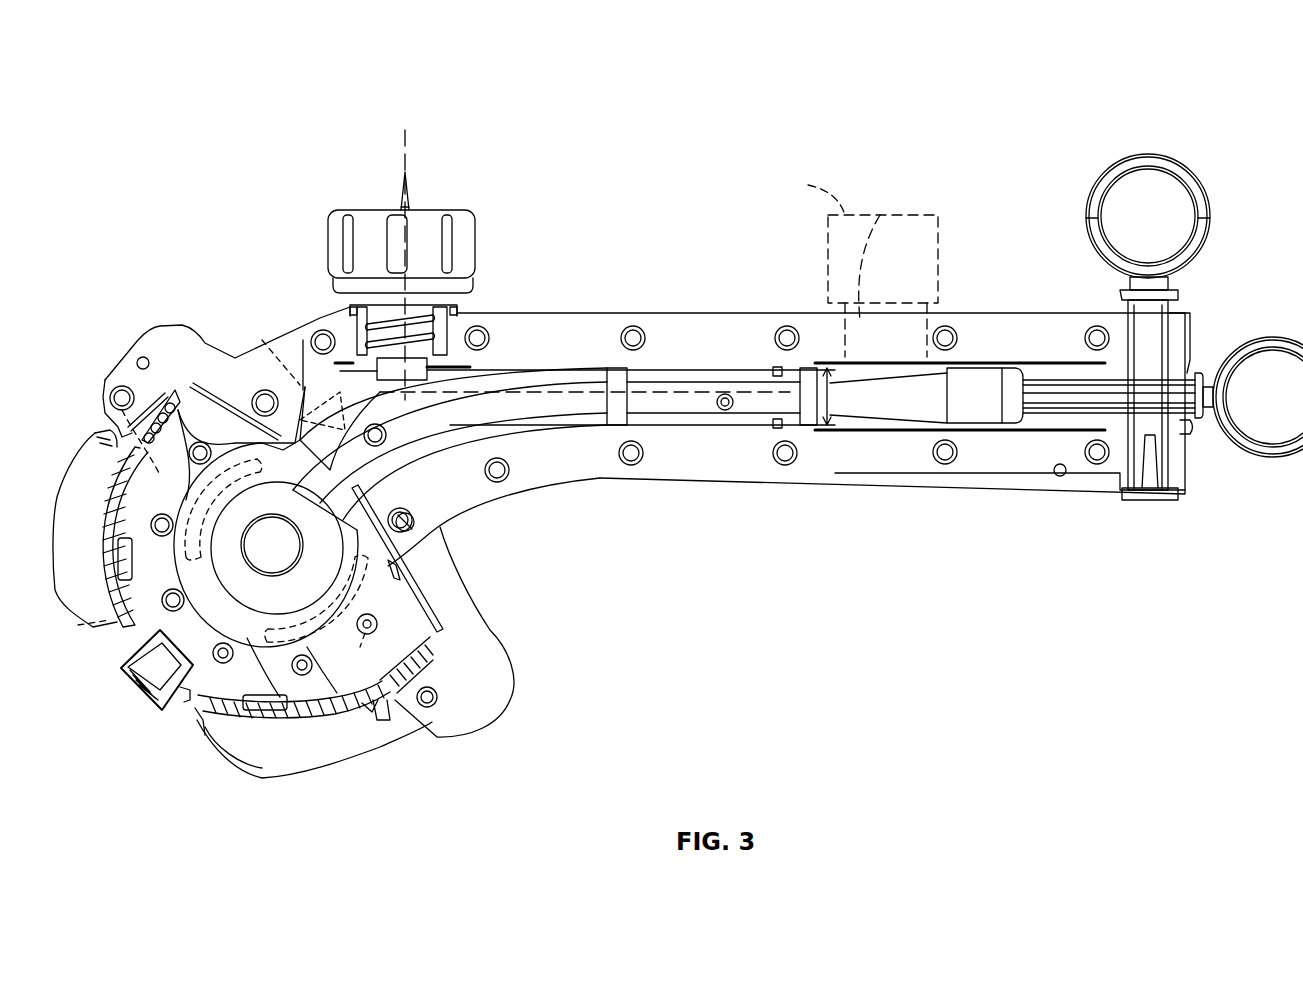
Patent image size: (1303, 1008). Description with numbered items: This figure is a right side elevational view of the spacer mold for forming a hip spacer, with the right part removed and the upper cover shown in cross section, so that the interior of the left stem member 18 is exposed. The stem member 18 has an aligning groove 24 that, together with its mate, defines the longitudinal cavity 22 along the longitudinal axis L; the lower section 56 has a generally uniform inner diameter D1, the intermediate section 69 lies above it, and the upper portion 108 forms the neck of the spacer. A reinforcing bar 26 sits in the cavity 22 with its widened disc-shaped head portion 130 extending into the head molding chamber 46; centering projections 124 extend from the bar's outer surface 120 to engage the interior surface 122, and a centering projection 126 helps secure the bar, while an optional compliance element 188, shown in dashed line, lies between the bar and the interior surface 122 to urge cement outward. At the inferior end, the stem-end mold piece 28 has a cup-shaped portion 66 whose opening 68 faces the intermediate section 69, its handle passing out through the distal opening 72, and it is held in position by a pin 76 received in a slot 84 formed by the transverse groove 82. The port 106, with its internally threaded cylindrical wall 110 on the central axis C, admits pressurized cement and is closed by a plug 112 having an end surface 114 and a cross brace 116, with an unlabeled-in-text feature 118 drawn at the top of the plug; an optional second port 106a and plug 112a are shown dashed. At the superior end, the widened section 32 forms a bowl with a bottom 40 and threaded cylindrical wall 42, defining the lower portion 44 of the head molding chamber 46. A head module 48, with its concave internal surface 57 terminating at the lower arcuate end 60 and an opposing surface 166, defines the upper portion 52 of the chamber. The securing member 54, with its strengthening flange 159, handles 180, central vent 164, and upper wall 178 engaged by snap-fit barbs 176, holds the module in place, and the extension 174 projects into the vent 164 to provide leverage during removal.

The left stem member 18 is at (750, 468).
The cavity 22 is at (686, 374).
The groove 24 is at (893, 422).
The reinforcing bar 26 is at (520, 375).
The stem-end mold piece 28 is at (1052, 407).
The widened section 32 is at (455, 728).
The bottom 40 is at (440, 618).
The cylindrical wall 42 is at (440, 665).
The lower portion 44 is at (405, 520).
The head molding chamber 46 is at (332, 700).
The head module 48 is at (208, 423).
The upper portion 52 is at (300, 708).
The securing member 54 is at (385, 727).
The lower section 56 is at (983, 433).
The internal surface 57 is at (124, 393).
The lower arcuate end 60 is at (460, 514).
The cup-shaped portion 66 is at (980, 370).
The opening 68 is at (940, 375).
The intermediate section 69 is at (572, 370).
The distal opening 72 is at (1186, 428).
The pin 76 is at (1165, 345).
The groove 82 is at (1165, 357).
The slot 84 is at (1157, 332).
The port 106 is at (450, 292).
The second port 106a is at (882, 190).
The upper portion 108 is at (503, 435).
The cylindrical wall 110 is at (350, 312).
The plug 112 is at (436, 215).
The plug 112a is at (795, 191).
The end surface 114 is at (430, 360).
The cross brace 116 is at (400, 200).
The indicator pin 118 is at (410, 185).
The outer surface 120 is at (437, 431).
The interior surface 122 is at (697, 410).
The centering projections 124 is at (776, 368).
The centering projection 126 is at (385, 440).
The head portion 130 is at (289, 510).
The strengthening flange 159 is at (100, 440).
The vent 164 is at (205, 722).
The opposing surface 166 is at (300, 697).
The extension 174 is at (150, 705).
The snap-fit barbs 176 is at (140, 670).
The upper wall 178 is at (115, 630).
The handles 180 is at (60, 522).
The compliance element 188 is at (207, 496).
The central axis C is at (401, 160).
The longitudinal axis L is at (637, 392).
The diameter D1 is at (840, 383).